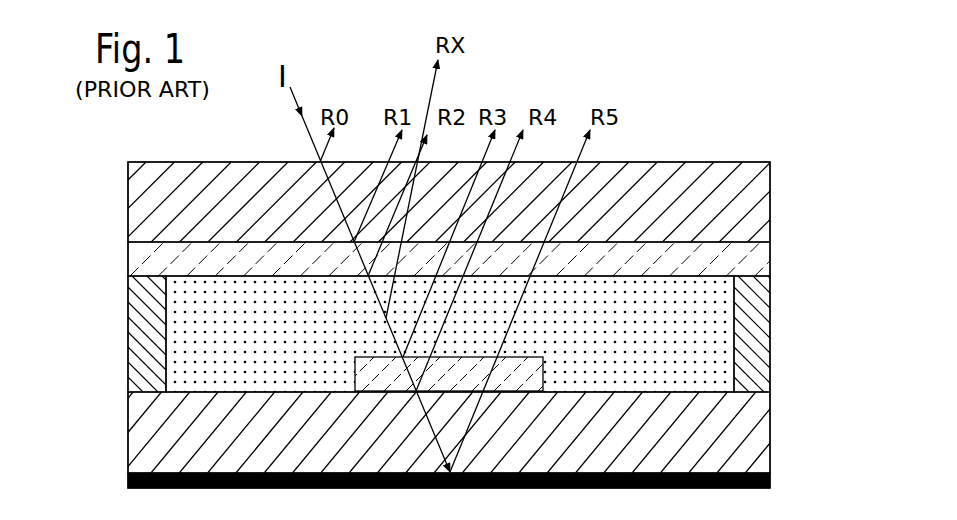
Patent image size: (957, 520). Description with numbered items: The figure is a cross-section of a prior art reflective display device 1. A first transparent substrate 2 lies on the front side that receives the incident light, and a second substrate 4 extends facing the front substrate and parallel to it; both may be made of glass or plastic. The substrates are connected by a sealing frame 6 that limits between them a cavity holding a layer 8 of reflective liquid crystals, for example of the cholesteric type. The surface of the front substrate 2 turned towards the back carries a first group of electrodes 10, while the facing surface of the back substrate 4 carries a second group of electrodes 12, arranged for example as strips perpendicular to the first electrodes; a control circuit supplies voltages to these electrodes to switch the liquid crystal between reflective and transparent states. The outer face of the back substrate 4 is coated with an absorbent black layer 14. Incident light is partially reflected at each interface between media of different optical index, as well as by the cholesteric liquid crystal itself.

The reflective display device 1 is at (797, 112).
The first transparent substrate 2 is at (745, 212).
The second substrate 4 is at (745, 445).
The sealing frame 6 is at (145, 302).
The layer of reflective liquid crystals 8 is at (703, 327).
The first group of electrodes 10 is at (160, 268).
The second group of electrodes 12 is at (532, 378).
The absorbent black layer 14 is at (128, 477).